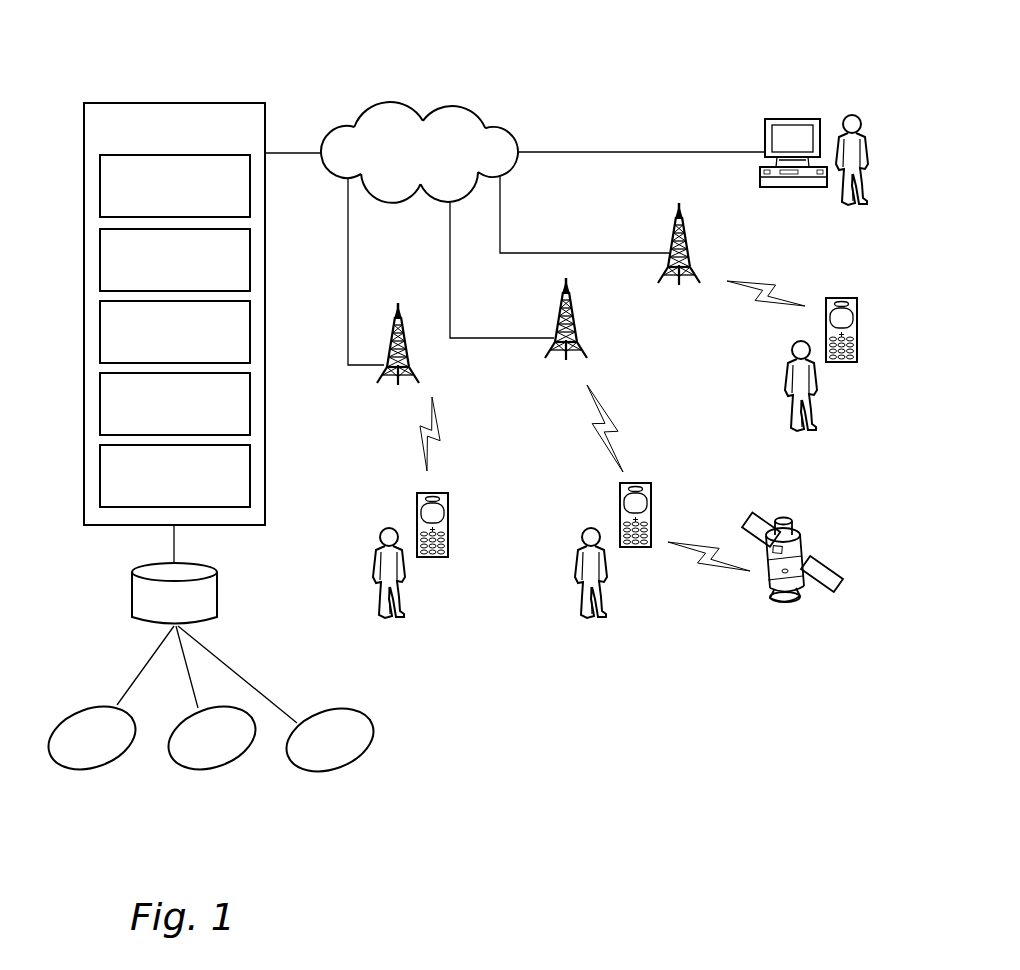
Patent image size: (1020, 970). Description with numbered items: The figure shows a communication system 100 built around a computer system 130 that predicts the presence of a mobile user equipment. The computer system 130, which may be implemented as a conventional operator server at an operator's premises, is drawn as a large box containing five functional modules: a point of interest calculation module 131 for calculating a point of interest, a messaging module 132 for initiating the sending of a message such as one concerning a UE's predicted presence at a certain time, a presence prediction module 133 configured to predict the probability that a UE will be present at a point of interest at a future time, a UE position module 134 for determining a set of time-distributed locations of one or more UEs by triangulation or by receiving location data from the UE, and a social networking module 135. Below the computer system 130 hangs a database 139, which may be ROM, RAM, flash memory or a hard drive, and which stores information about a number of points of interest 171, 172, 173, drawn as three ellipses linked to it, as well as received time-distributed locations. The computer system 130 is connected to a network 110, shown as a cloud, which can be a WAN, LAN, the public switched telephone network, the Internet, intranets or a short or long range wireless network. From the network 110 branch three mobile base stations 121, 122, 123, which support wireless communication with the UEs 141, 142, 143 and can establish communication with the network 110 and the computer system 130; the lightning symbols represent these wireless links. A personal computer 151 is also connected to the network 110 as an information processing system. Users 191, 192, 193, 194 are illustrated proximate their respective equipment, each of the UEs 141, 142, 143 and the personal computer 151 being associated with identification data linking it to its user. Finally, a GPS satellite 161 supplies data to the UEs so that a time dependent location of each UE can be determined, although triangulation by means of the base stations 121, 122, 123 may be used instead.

The communication system 100 is at (615, 62).
The network 110 is at (438, 163).
The mobile base station 121 is at (410, 360).
The mobile base station 122 is at (582, 336).
The mobile base station 123 is at (699, 251).
The computer system 130 is at (258, 134).
The point of interest calculation module 131 is at (193, 189).
The messaging module 132 is at (193, 263).
The presence prediction module 133 is at (193, 335).
The UE position module 134 is at (193, 407).
The social networking module 135 is at (193, 479).
The database 139 is at (193, 610).
The user equipment 141 is at (417, 507).
The user equipment 142 is at (620, 512).
The user equipment 143 is at (849, 298).
The personal computer 151 is at (780, 118).
The GPS satellite 161 is at (800, 534).
The point of interest 171 is at (83, 773).
The point of interest 172 is at (206, 773).
The point of interest 173 is at (330, 775).
The user 191 is at (375, 567).
The user 192 is at (577, 592).
The user 193 is at (786, 410).
The user 194 is at (847, 113).